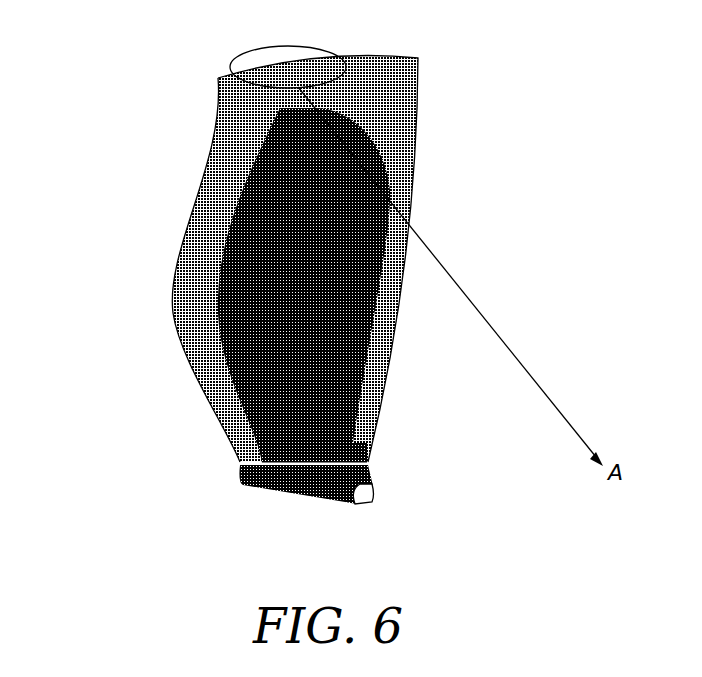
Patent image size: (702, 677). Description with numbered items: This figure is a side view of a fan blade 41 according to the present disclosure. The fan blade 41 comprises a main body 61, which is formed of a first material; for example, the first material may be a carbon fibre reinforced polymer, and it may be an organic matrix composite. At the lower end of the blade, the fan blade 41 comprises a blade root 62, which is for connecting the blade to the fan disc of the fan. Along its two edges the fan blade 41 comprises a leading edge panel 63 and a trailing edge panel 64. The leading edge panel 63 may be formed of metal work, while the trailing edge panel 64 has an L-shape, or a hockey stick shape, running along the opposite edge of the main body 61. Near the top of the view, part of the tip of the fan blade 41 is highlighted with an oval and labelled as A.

The fan blade 41 is at (497, 58).
The main body 61 is at (222, 365).
The blade root 62 is at (303, 488).
The leading edge panel 63 is at (200, 222).
The trailing edge panel 64 is at (400, 153).